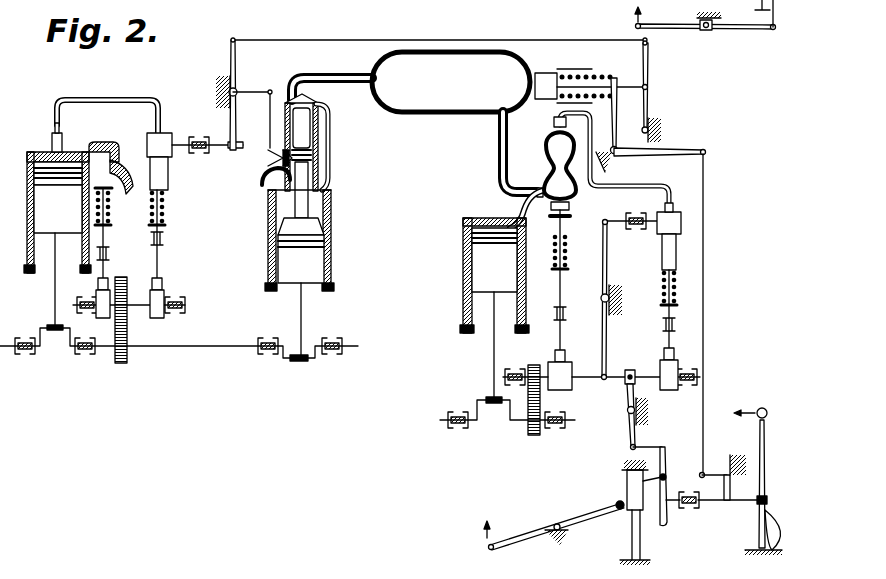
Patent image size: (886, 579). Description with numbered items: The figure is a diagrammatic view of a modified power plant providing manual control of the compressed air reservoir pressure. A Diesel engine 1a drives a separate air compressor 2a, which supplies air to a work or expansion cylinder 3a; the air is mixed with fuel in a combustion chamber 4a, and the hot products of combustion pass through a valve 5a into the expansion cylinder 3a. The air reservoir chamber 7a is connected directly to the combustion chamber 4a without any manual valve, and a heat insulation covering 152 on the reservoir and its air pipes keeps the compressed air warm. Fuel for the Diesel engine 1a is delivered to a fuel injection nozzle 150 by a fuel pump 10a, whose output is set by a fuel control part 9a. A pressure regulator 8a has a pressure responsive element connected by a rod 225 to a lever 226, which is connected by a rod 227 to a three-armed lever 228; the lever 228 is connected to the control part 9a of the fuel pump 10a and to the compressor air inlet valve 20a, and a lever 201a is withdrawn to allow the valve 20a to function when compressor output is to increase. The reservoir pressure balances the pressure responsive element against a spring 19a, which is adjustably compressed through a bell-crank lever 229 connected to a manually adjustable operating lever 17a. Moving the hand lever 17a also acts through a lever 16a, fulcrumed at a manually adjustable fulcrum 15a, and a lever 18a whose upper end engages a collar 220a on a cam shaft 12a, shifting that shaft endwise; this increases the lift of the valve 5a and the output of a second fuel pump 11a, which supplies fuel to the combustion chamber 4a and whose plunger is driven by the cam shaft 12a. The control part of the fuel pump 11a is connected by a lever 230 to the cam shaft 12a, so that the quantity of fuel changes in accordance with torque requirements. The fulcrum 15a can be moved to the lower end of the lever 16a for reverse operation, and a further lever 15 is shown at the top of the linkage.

The Diesel engine 1a is at (71, 235).
The air compressor 2a is at (299, 224).
The expansion cylinder 3a is at (507, 326).
The combustion chamber 4a is at (553, 150).
The valve 5a is at (566, 214).
The air reservoir chamber 7a is at (451, 82).
The pressure regulator 8a is at (548, 86).
The fuel control part 9a is at (182, 148).
The fuel pump 10a is at (156, 142).
The fuel pump 11a is at (669, 220).
The cam shaft 12a is at (660, 372).
The lever 15 is at (672, 26).
The fulcrum 15a is at (664, 478).
The lever 16a is at (668, 520).
The operating lever 17a is at (762, 448).
The lever 18a is at (631, 438).
The spring 19a is at (636, 95).
The valve 20a is at (285, 190).
The fuel injection nozzle 150 is at (52, 140).
The heat insulation covering 152 is at (422, 112).
The lever 201a is at (280, 158).
The collar 220a is at (627, 382).
The rod 225 is at (640, 90).
The lever 226 is at (647, 62).
The rod 227 is at (441, 40).
The three-armed lever 228 is at (232, 60).
The bell-crank lever 229 is at (663, 148).
The lever 230 is at (602, 312).